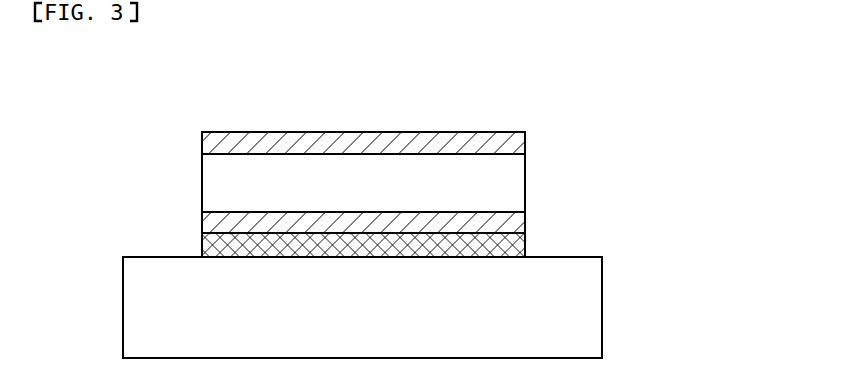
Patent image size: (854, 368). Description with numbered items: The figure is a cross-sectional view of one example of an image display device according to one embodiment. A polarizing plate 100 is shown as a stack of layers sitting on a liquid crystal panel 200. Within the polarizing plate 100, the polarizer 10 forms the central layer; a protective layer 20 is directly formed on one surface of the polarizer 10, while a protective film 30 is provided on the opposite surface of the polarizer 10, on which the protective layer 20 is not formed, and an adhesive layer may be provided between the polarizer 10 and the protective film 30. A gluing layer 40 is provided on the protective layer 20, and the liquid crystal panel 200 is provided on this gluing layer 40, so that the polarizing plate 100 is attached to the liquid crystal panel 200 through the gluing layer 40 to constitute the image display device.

The polarizing plate 100 is at (477, 177).
The liquid crystal panel 200 is at (593, 313).
The polarizer 10 is at (517, 180).
The protective layer 20 is at (525, 217).
The protective film 30 is at (525, 133).
The gluing layer 40 is at (432, 245).